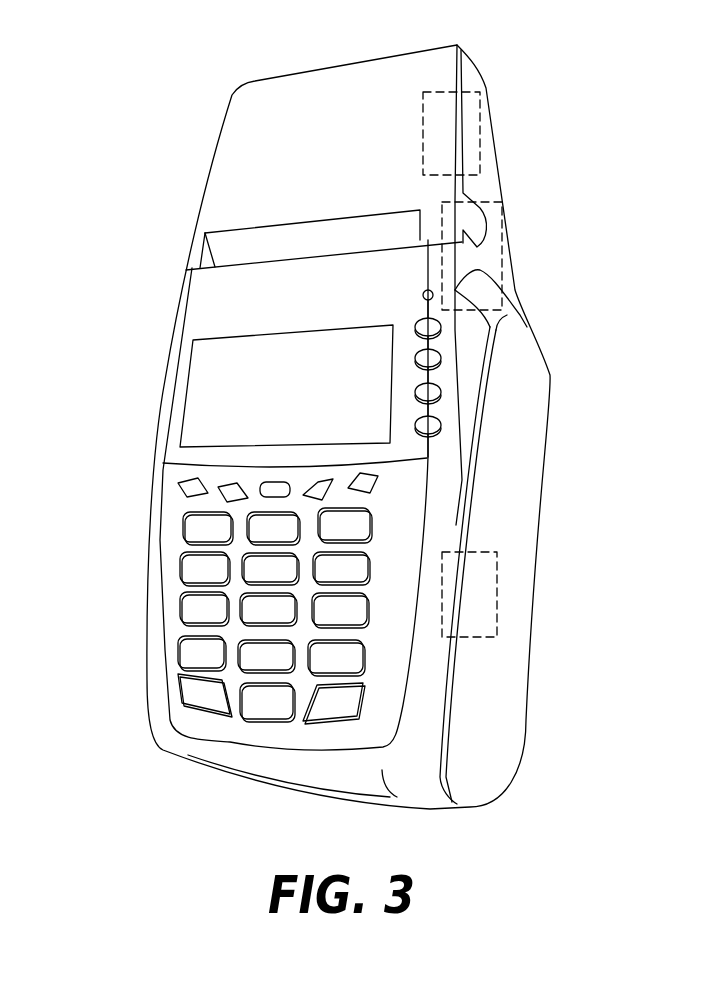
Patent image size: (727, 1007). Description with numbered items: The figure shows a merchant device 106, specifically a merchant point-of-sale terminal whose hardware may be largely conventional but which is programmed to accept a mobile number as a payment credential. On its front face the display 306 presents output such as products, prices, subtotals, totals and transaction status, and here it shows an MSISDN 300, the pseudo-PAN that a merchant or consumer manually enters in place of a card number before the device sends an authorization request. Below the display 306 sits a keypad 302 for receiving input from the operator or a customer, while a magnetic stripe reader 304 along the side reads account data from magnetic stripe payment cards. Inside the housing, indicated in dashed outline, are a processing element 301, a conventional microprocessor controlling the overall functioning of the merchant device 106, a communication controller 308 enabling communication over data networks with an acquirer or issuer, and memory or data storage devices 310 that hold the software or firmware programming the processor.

The merchant device 106 is at (142, 79).
The MSISDN 300 is at (230, 373).
The processing element 301 is at (497, 603).
The keypad 302 is at (202, 567).
The magnetic stripe reader 304 is at (478, 393).
The display 306 is at (230, 337).
The communication controller 308 is at (502, 263).
The memory and/or data storage device 310 is at (480, 140).